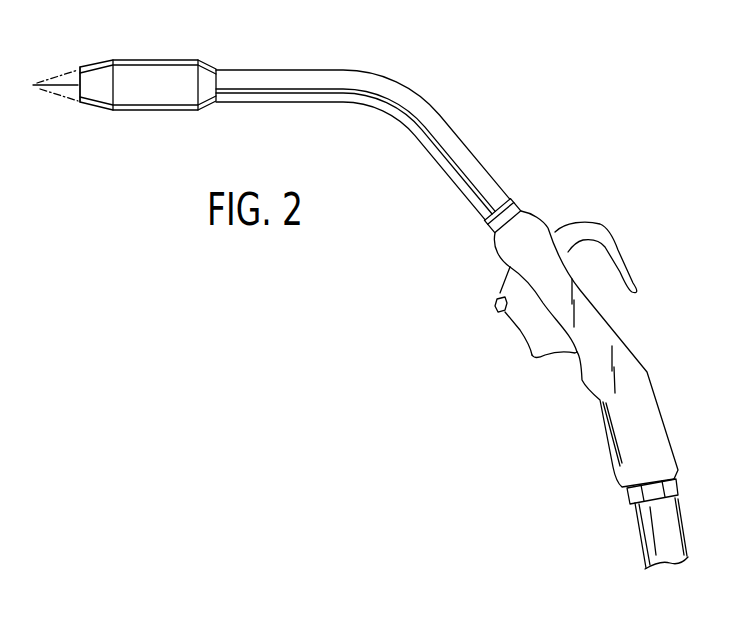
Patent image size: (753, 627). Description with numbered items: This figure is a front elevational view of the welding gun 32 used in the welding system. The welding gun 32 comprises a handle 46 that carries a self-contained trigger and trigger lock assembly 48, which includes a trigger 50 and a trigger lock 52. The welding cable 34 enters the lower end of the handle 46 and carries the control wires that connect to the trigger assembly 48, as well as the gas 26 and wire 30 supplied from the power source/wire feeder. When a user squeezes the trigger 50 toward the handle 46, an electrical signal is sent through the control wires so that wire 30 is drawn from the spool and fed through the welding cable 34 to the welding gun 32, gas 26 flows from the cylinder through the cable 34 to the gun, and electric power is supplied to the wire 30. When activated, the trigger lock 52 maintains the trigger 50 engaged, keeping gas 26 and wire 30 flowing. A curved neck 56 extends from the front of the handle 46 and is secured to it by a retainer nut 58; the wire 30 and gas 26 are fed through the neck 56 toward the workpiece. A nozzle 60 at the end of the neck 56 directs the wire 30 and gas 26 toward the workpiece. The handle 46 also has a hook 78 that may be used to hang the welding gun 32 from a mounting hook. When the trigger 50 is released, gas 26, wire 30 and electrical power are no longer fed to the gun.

The gas 26 is at (63, 76).
The wire 30 is at (33, 84).
The welding gun 32 is at (601, 91).
The welding cable 34 is at (667, 518).
The handle 46 is at (647, 372).
The self-contained trigger and trigger lock assembly 48 is at (519, 330).
The trigger 50 is at (542, 350).
The trigger lock 52 is at (495, 306).
The neck 56 is at (405, 93).
The retainer nut 58 is at (487, 226).
The nozzle 60 is at (150, 60).
The hook 78 is at (597, 223).